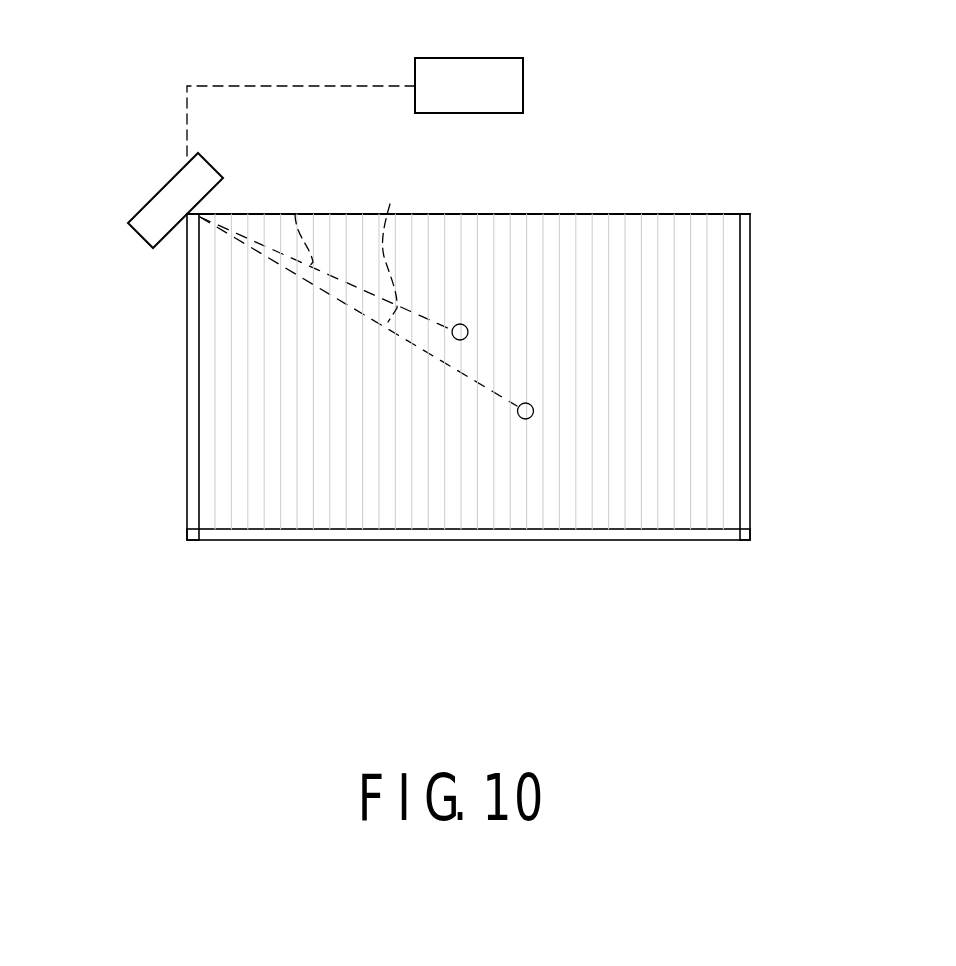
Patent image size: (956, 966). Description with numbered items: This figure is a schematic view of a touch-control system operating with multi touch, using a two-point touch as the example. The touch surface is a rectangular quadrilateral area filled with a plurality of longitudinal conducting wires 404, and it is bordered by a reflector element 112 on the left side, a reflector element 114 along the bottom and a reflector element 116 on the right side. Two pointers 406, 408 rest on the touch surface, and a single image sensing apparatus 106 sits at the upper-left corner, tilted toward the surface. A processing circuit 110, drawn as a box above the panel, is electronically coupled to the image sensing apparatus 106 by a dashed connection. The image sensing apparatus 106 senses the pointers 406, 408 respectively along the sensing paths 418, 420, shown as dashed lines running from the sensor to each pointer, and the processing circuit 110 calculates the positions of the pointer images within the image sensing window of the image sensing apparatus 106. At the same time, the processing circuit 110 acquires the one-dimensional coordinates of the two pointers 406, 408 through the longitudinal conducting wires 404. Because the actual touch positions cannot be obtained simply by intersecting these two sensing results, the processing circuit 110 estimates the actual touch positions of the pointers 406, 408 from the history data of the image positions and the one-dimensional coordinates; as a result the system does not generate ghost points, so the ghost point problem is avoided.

The processing circuit 110 is at (467, 58).
The image sensing apparatus 106 is at (140, 238).
The reflector element 112 is at (192, 372).
The reflector element 114 is at (221, 533).
The reflector element 116 is at (745, 408).
The longitudinal conducting wires 404 is at (705, 465).
The pointer 406 is at (462, 324).
The pointer 408 is at (522, 419).
The sensing path 418 is at (297, 204).
The sensing path 420 is at (392, 204).